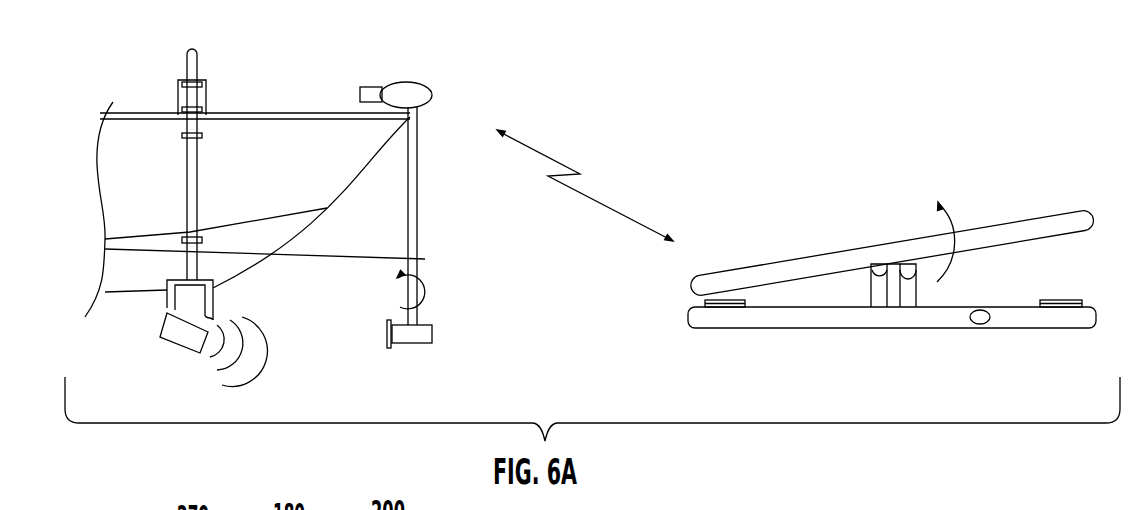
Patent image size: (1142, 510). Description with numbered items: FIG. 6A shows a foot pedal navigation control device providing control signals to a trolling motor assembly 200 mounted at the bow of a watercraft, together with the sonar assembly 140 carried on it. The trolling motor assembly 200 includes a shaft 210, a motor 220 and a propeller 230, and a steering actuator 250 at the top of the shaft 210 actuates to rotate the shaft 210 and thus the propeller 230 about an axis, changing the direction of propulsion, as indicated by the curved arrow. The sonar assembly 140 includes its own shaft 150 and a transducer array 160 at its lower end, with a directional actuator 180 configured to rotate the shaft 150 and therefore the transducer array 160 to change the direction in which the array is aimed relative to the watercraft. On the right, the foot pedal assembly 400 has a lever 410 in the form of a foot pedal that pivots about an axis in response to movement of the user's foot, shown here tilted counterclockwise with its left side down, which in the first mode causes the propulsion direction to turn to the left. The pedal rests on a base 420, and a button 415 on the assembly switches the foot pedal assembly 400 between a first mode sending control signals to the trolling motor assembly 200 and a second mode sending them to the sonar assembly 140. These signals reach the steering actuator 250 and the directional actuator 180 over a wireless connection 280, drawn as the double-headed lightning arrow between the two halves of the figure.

The sonar assembly 140 is at (216, 178).
The shaft 150 is at (182, 151).
The transducer array 160 is at (163, 340).
The directional actuator 180 is at (206, 99).
The trolling motor assembly 200 is at (423, 219).
The shaft 210 is at (417, 213).
The motor 220 is at (433, 330).
The propeller 230 is at (388, 334).
The steering actuator 250 is at (432, 95).
The wireless connection 280 is at (550, 158).
The foot pedal assembly 400 is at (892, 263).
The lever 410 is at (1028, 215).
The button 415 is at (977, 328).
The pedal base 420 is at (797, 327).